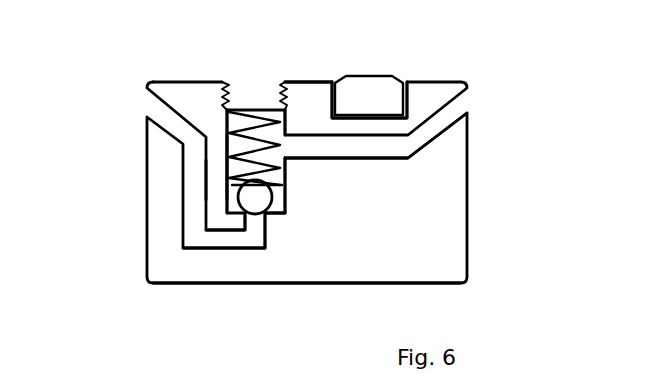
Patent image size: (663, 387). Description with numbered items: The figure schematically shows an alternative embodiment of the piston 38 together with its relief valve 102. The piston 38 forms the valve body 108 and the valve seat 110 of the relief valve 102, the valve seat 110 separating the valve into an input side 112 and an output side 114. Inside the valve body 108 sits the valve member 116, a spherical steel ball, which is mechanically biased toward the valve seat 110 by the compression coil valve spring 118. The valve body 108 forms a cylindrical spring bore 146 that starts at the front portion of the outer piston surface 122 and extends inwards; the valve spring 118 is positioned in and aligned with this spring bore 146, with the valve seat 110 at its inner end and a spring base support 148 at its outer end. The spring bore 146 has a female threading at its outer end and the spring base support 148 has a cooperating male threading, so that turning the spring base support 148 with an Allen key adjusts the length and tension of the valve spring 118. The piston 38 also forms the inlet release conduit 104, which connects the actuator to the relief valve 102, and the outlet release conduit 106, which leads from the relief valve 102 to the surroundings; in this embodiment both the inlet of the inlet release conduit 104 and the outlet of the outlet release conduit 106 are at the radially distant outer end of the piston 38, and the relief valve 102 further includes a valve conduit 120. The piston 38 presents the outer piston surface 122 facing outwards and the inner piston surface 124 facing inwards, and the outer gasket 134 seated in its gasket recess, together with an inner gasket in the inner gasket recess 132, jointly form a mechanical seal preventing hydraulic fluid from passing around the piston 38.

The piston 38 is at (447, 182).
The relief valve 102 is at (216, 178).
The inlet release conduit 104 is at (468, 100).
The outlet release conduit 106 is at (155, 104).
The valve body 108 is at (227, 147).
The valve seat 110 is at (275, 217).
The input side 112 is at (283, 150).
The output side 114 is at (245, 238).
The valve member 116 is at (255, 200).
The valve spring 118 is at (257, 133).
The valve conduit 120 is at (398, 203).
The outer piston surface 122 is at (316, 84).
The inner piston surface 124 is at (387, 283).
The inner gasket recess 132 is at (435, 95).
The outer gasket 134 is at (369, 82).
The spring bore 146 is at (225, 118).
The spring base support 148 is at (248, 92).